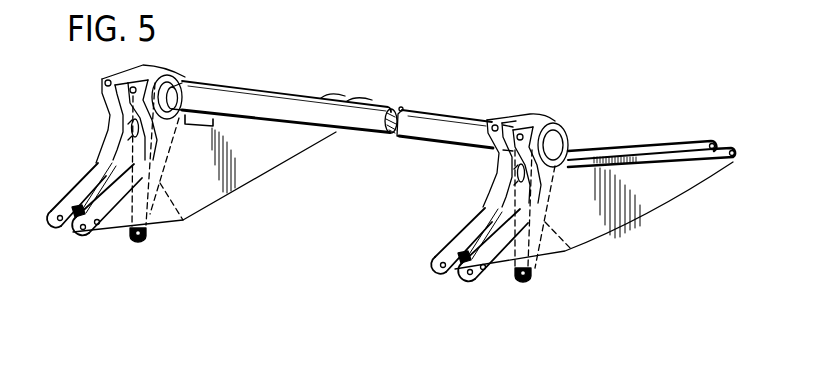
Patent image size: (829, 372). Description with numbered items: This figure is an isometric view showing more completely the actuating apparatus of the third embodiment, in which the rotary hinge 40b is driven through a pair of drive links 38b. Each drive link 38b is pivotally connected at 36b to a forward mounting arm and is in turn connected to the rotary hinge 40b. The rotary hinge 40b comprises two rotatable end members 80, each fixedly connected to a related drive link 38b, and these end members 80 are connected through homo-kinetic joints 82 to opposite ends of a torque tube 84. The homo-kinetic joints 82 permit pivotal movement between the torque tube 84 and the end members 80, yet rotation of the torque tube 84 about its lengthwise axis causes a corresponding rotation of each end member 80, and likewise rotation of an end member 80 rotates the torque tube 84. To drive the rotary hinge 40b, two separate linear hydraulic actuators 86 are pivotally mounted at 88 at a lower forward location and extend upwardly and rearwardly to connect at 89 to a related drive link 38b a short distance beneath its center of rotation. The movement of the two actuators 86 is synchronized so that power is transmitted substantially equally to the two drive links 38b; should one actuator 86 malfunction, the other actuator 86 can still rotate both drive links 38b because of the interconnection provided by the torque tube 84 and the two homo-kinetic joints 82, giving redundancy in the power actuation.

The pivotal connection 36b is at (146, 238).
The drive link 38b is at (183, 220).
The rotary hinge 40b is at (166, 65).
The end member 80 is at (567, 136).
The homo-kinetic joint 82 is at (188, 82).
The torque tube 84 is at (443, 113).
The linear hydraulic actuator 86 is at (103, 165).
The pivotal mounting 88 is at (99, 228).
The connection 89 is at (142, 134).